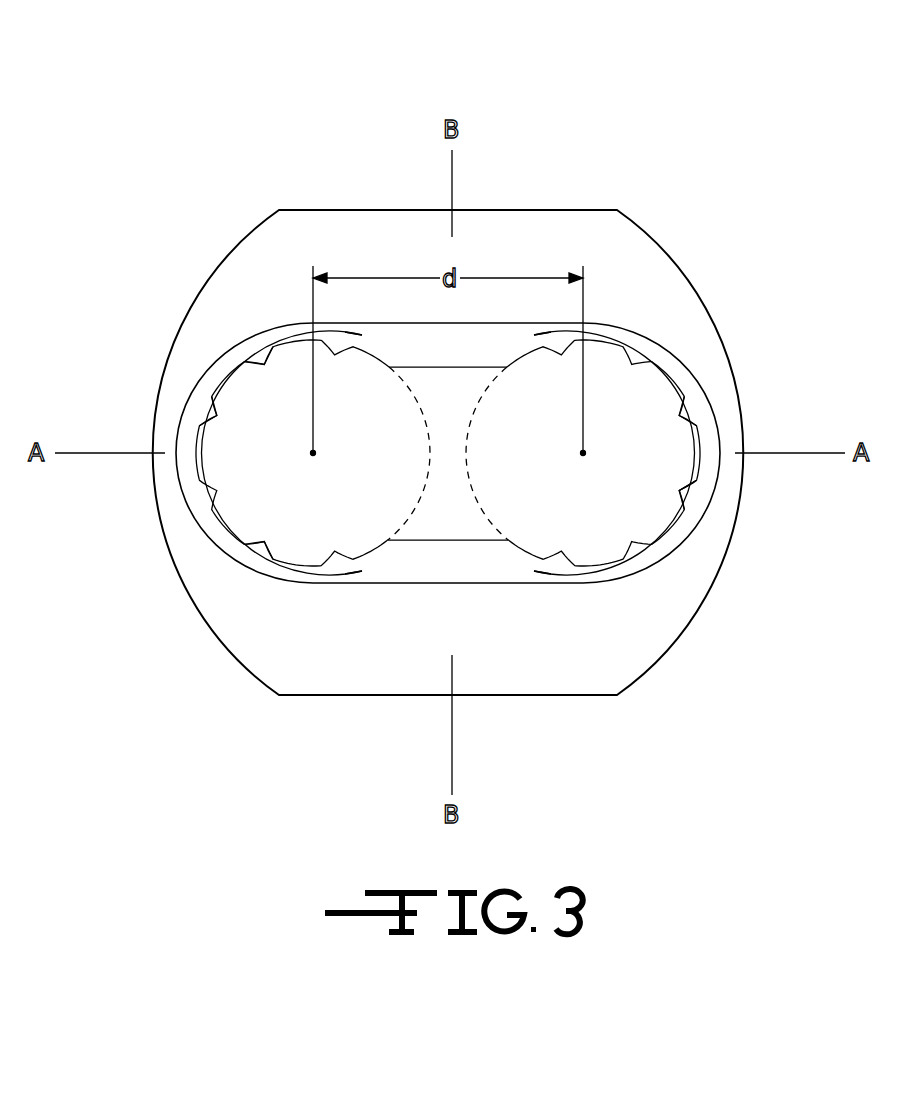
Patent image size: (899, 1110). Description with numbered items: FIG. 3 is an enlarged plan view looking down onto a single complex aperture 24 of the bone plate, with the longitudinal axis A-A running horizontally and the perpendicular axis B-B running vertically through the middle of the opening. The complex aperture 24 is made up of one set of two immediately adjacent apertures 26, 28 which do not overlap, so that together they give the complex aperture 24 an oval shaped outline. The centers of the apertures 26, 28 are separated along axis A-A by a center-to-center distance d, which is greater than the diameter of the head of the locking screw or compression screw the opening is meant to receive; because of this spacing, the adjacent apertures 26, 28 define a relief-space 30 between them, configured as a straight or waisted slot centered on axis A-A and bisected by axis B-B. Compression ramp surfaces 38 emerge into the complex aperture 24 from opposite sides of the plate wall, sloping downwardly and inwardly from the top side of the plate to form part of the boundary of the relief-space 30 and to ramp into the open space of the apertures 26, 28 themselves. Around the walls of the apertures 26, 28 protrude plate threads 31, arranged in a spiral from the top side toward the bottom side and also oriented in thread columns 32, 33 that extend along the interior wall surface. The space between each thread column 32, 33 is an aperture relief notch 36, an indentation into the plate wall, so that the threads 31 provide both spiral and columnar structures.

The complex aperture 24 is at (720, 466).
The aperture 26 is at (622, 475).
The aperture 28 is at (272, 457).
The relief-space 30 is at (455, 455).
The plate threads 31 is at (283, 530).
The thread column 32 is at (217, 412).
The thread column 33 is at (254, 355).
The aperture relief notch 36 is at (216, 538).
The compression ramp surface 38 is at (206, 398).